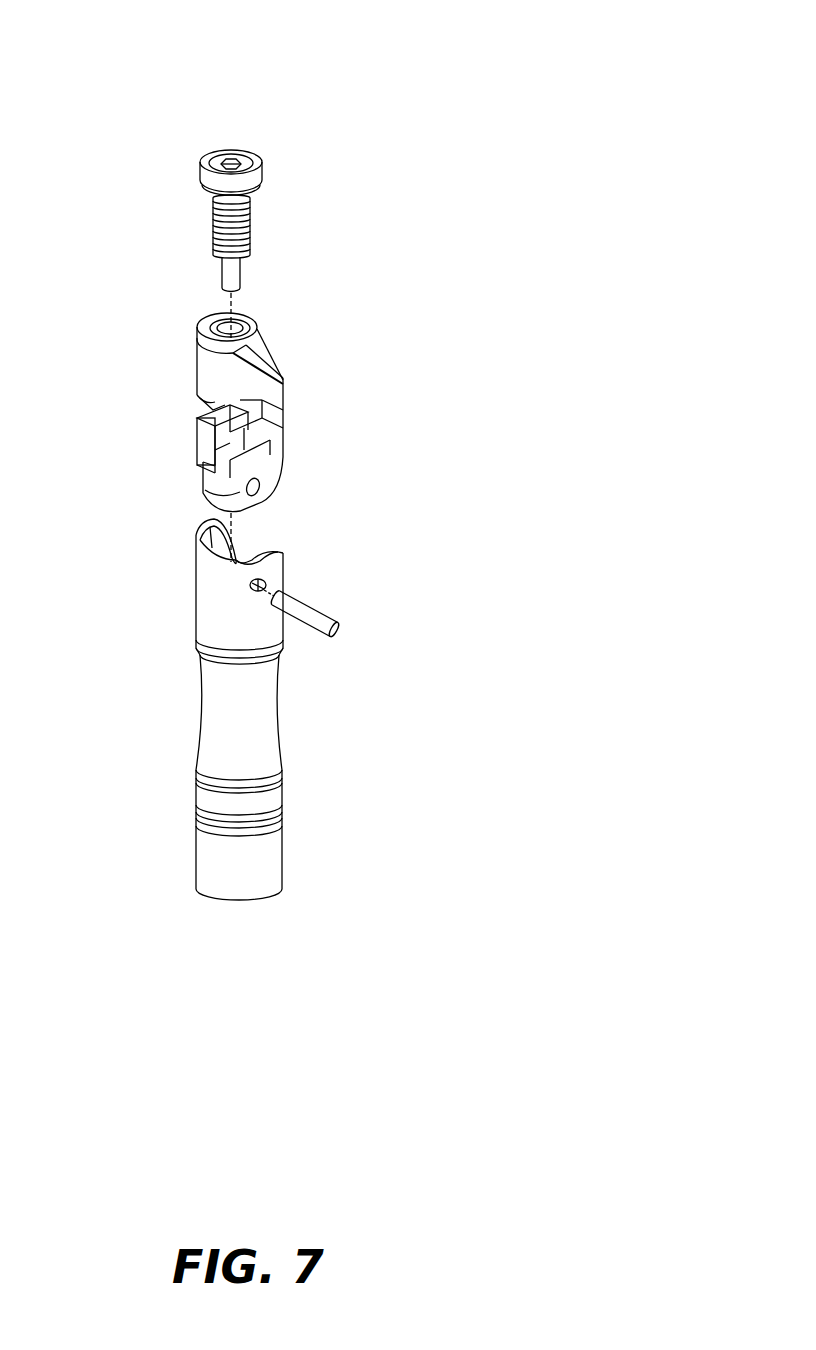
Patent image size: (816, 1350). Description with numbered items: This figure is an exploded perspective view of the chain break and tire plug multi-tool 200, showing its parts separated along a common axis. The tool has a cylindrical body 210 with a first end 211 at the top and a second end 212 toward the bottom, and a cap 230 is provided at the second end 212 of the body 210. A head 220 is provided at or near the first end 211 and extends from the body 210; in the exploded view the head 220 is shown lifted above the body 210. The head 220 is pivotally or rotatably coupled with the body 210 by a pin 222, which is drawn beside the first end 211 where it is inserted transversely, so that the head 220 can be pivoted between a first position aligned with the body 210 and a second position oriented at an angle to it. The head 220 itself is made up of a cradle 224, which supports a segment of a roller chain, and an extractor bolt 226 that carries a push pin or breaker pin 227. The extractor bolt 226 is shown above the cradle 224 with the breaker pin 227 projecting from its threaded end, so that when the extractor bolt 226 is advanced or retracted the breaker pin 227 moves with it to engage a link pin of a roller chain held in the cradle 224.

The chain break and tire plug multi-tool 200 is at (415, 84).
The head 220 is at (132, 251).
The extractor bolt 226 is at (248, 168).
The push pin or breaker pin 227 is at (234, 272).
The cradle 224 is at (300, 434).
The first end 211 is at (168, 534).
The cylindrical body 210 is at (300, 706).
The pin 222 is at (326, 617).
The second end 212 is at (174, 796).
The cap 230 is at (174, 873).